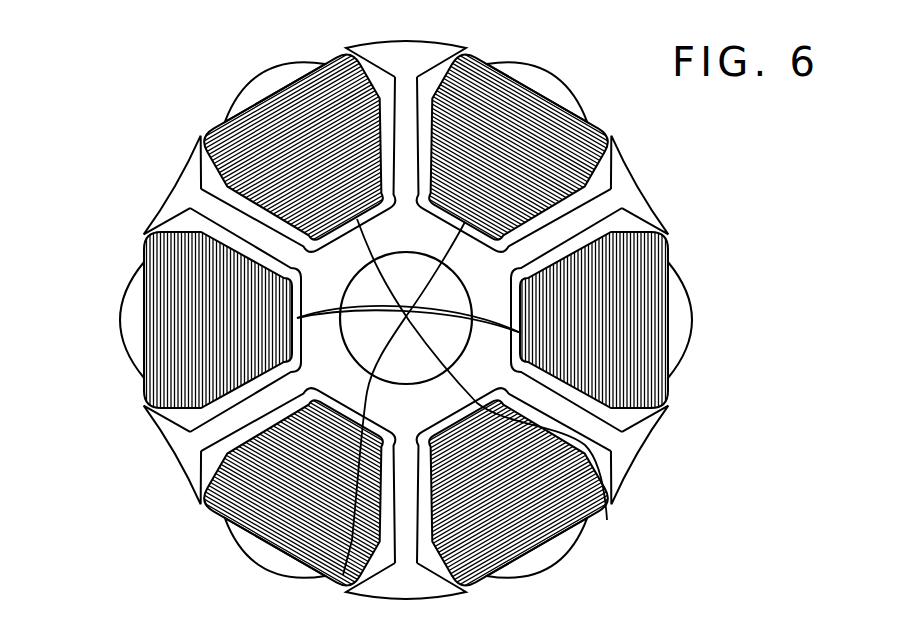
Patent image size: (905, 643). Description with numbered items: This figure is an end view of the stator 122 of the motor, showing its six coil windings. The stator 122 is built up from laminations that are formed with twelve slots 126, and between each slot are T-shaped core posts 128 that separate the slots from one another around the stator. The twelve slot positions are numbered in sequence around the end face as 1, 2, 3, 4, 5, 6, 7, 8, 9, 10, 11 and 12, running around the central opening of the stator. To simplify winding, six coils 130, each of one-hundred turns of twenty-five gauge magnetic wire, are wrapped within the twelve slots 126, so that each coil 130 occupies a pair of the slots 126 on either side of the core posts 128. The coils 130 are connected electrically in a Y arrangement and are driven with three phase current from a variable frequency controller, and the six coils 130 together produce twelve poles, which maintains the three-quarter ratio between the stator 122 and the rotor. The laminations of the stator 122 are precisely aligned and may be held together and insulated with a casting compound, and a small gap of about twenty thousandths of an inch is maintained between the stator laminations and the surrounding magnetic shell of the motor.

The stator 122 is at (378, 43).
The slots 126 is at (404, 318).
The T-shaped core posts 128 is at (253, 83).
The coils 130 is at (343, 577).
The slot position 1 is at (308, 288).
The slot position 2 is at (311, 350).
The slot position 3 is at (336, 385).
The slot position 4 is at (385, 408).
The slot position 5 is at (426, 408).
The slot position 6 is at (483, 377).
The slot position 7 is at (503, 347).
The slot position 8 is at (501, 287).
The slot position 9 is at (476, 253).
The slot position 10 is at (428, 224).
The slot position 11 is at (386, 224).
The slot position 12 is at (340, 257).